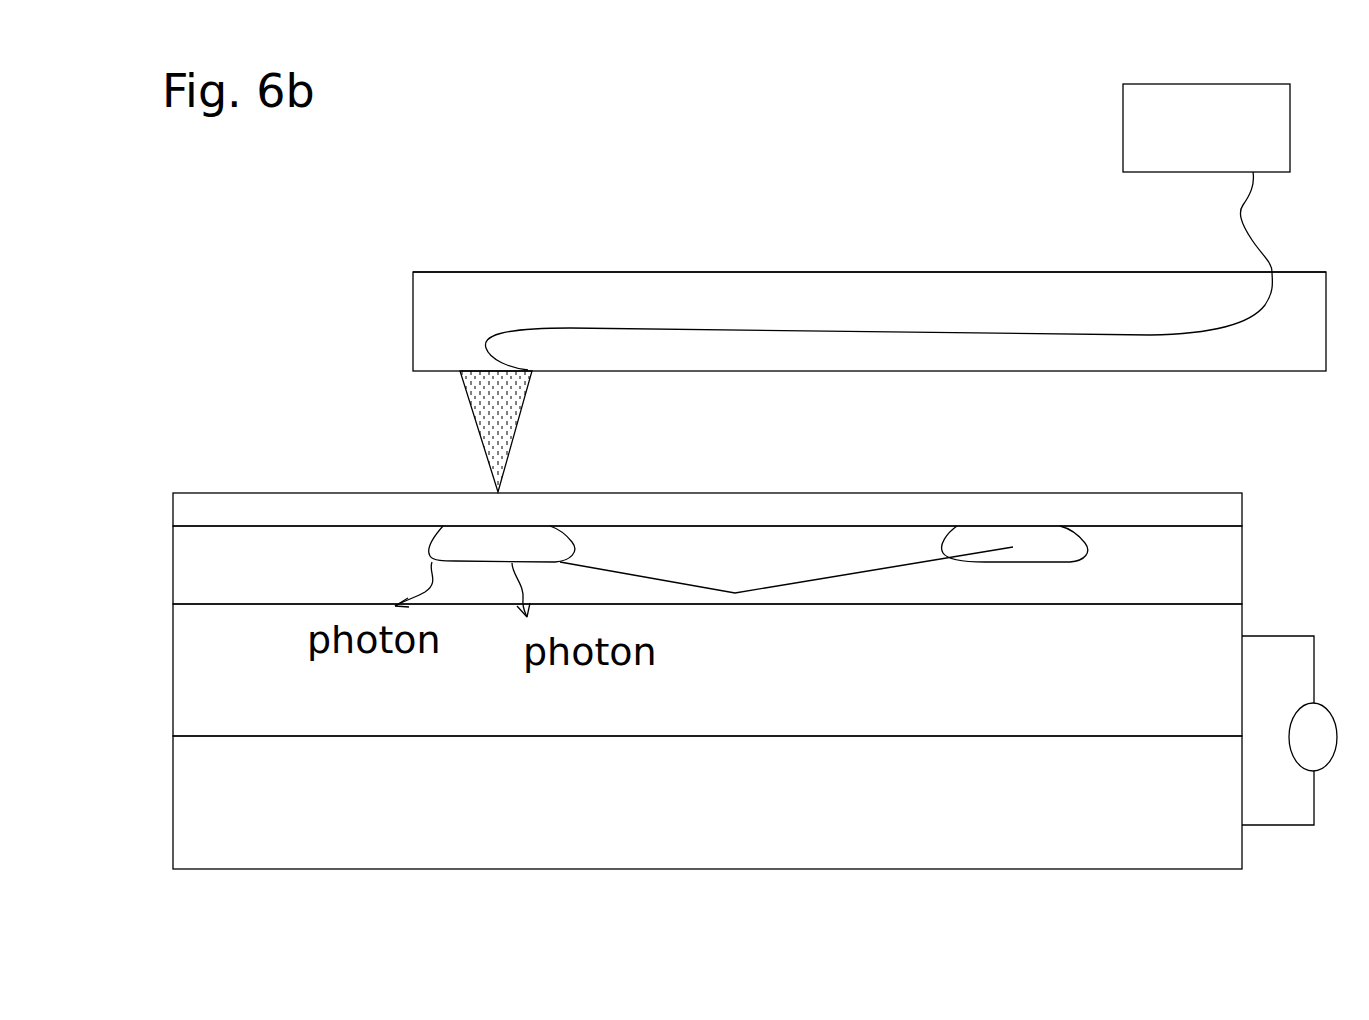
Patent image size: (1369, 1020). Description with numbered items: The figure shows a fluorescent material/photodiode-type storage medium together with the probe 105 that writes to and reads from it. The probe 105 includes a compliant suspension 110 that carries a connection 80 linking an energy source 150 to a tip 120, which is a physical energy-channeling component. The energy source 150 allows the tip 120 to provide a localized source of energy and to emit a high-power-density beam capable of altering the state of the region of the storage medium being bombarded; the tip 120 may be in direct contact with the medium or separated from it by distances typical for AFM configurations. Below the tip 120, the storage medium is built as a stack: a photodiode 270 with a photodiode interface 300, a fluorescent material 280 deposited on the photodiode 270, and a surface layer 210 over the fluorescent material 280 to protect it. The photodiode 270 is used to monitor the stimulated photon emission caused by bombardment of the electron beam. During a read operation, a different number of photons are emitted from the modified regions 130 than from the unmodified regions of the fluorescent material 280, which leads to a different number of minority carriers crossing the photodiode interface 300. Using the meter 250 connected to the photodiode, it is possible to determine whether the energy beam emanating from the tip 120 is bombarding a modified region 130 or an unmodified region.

The connection 80 is at (845, 327).
The probe 105 is at (378, 295).
The compliant suspension 110 is at (520, 295).
The tip 120 is at (524, 403).
The modified region 130 is at (758, 582).
The energy source 150 is at (1206, 128).
The surface layer 210 is at (353, 505).
The meter 250 is at (1300, 737).
The photodiode 270 is at (271, 670).
The fluorescent material 280 is at (1157, 571).
The photodiode interface 300 is at (748, 738).